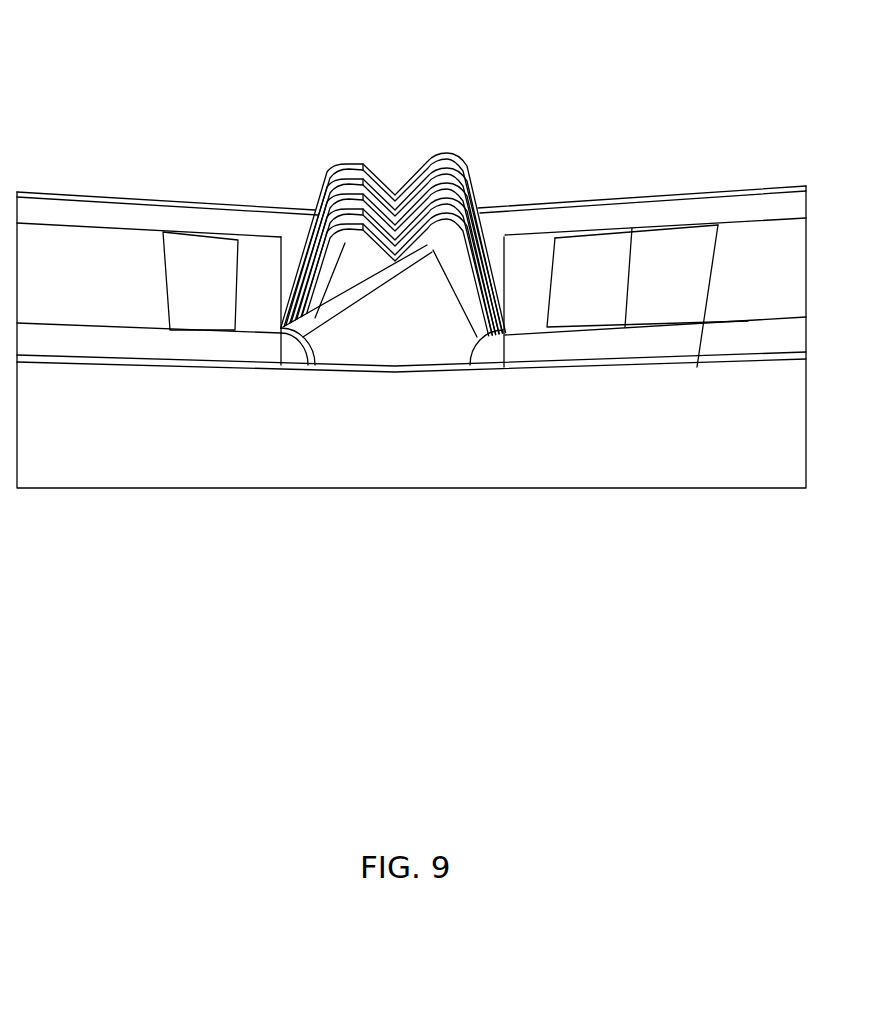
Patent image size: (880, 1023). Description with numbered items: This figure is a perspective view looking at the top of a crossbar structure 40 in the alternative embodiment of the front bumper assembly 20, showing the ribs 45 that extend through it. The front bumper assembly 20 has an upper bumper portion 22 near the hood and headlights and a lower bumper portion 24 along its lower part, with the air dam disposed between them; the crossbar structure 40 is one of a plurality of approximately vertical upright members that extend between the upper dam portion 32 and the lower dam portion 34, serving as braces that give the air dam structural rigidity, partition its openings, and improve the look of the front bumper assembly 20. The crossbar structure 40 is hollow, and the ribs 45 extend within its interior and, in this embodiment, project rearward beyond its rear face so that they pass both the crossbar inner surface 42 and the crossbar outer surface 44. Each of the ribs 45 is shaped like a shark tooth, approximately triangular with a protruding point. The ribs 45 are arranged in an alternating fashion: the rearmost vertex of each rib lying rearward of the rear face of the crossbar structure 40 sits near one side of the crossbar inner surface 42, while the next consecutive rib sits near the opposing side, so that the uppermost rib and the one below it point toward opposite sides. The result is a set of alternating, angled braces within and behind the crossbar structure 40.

The front bumper assembly 20 is at (177, 445).
The upper bumper portion 22 is at (652, 368).
The lower bumper portion 24 is at (565, 203).
The upper dam portion 32 is at (747, 320).
The lower dam portion 34 is at (697, 367).
The crossbar structure 40 is at (295, 141).
The crossbar inner surface 42 is at (237, 287).
The crossbar outer surface 44 is at (283, 250).
The ribs 45 is at (350, 163).